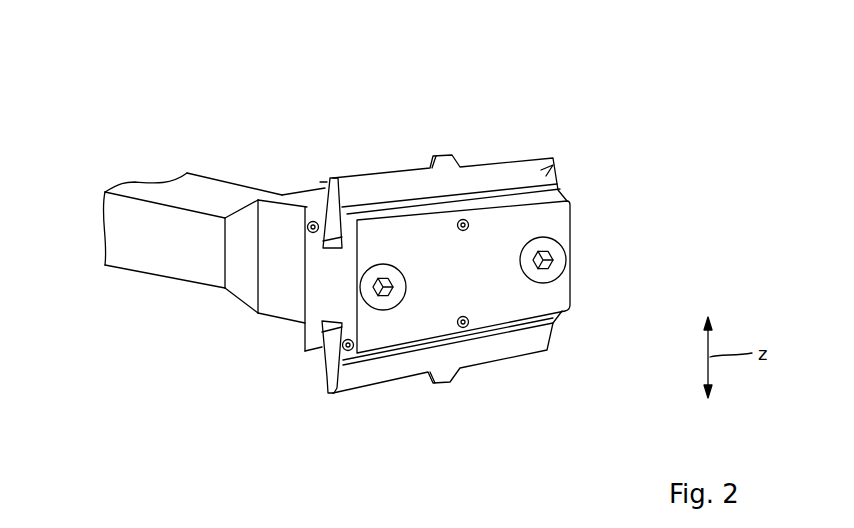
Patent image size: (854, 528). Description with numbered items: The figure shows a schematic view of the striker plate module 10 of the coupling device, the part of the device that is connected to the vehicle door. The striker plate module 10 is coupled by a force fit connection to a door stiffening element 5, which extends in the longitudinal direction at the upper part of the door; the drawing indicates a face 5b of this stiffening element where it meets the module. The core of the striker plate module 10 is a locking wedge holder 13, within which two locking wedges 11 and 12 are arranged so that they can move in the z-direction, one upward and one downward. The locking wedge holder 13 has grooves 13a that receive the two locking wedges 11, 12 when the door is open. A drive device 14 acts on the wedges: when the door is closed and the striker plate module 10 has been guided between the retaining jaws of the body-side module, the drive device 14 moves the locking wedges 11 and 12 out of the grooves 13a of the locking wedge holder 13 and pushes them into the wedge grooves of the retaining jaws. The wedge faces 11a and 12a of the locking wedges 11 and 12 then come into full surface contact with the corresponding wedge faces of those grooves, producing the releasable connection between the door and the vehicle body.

The door stiffening element 5 is at (125, 234).
The shank bottom face 5b is at (202, 270).
The striker plate module 10 is at (599, 130).
The locking wedge 11 is at (364, 162).
The wedge face 11a is at (329, 178).
The locking wedge 12 is at (363, 400).
The wedge face 12a is at (320, 377).
The locking wedge holder 13 is at (587, 258).
The grooves 13a is at (340, 247).
The drive device 14 is at (292, 271).